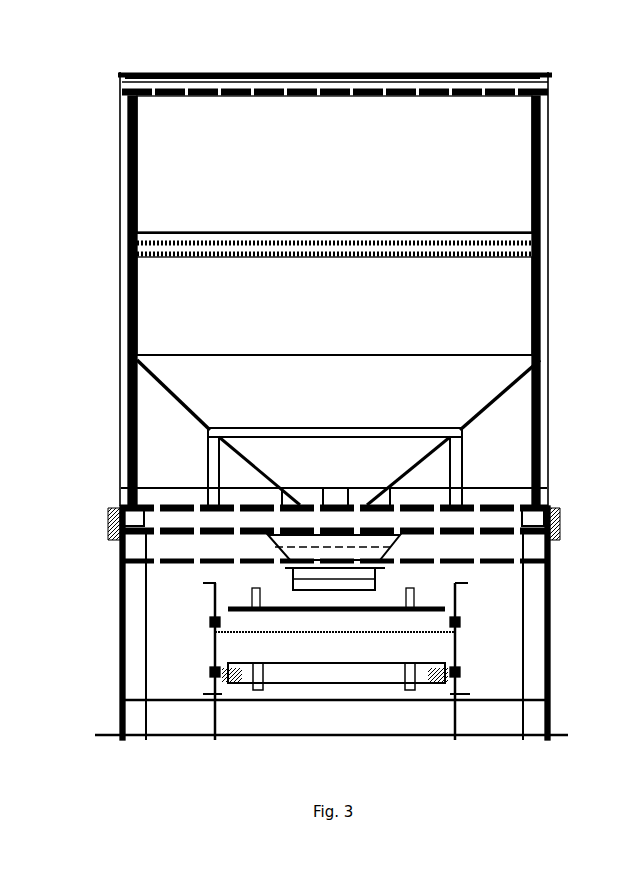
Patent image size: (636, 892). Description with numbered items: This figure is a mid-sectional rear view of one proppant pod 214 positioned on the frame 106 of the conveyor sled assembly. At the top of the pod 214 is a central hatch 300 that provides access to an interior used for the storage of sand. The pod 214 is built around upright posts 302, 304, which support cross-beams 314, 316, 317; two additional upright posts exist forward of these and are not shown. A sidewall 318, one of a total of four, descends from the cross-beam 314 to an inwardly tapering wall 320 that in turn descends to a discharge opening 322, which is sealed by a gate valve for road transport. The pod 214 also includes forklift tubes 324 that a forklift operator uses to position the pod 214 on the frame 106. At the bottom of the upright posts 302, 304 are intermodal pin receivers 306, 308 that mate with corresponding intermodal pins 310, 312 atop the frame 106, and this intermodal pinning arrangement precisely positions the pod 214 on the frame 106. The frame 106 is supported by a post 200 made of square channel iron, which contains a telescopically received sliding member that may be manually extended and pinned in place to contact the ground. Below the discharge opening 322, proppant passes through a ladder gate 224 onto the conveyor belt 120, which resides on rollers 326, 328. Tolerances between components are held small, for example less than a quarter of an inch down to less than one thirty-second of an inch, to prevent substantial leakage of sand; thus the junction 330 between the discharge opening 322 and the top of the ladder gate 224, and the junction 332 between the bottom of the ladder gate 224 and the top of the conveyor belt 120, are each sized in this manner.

The central hatch 300 is at (385, 73).
The cross-beam 314 is at (233, 72).
The upright post 302 is at (552, 188).
The upright post 304 is at (128, 320).
The pod 214 is at (334, 164).
The cross-beam 316 is at (232, 233).
The sidewall 318 is at (368, 326).
The inwardly tapering wall 320 is at (360, 418).
The junction 330 is at (164, 455).
The discharge opening 322 is at (370, 490).
The forklift tubes 324 is at (478, 487).
The cross-beam 317 is at (121, 490).
The intermodal pin receiver 308 is at (118, 508).
The intermodal pin receiver 306 is at (548, 500).
The intermodal pin 312 is at (116, 522).
The intermodal pin 310 is at (556, 522).
The frame 106 is at (552, 562).
The post 200 is at (126, 652).
The ladder gate 224 is at (400, 538).
The junction 332 is at (392, 586).
The conveyor belt 120 is at (265, 600).
The roller 326 is at (458, 616).
The roller 328 is at (446, 667).